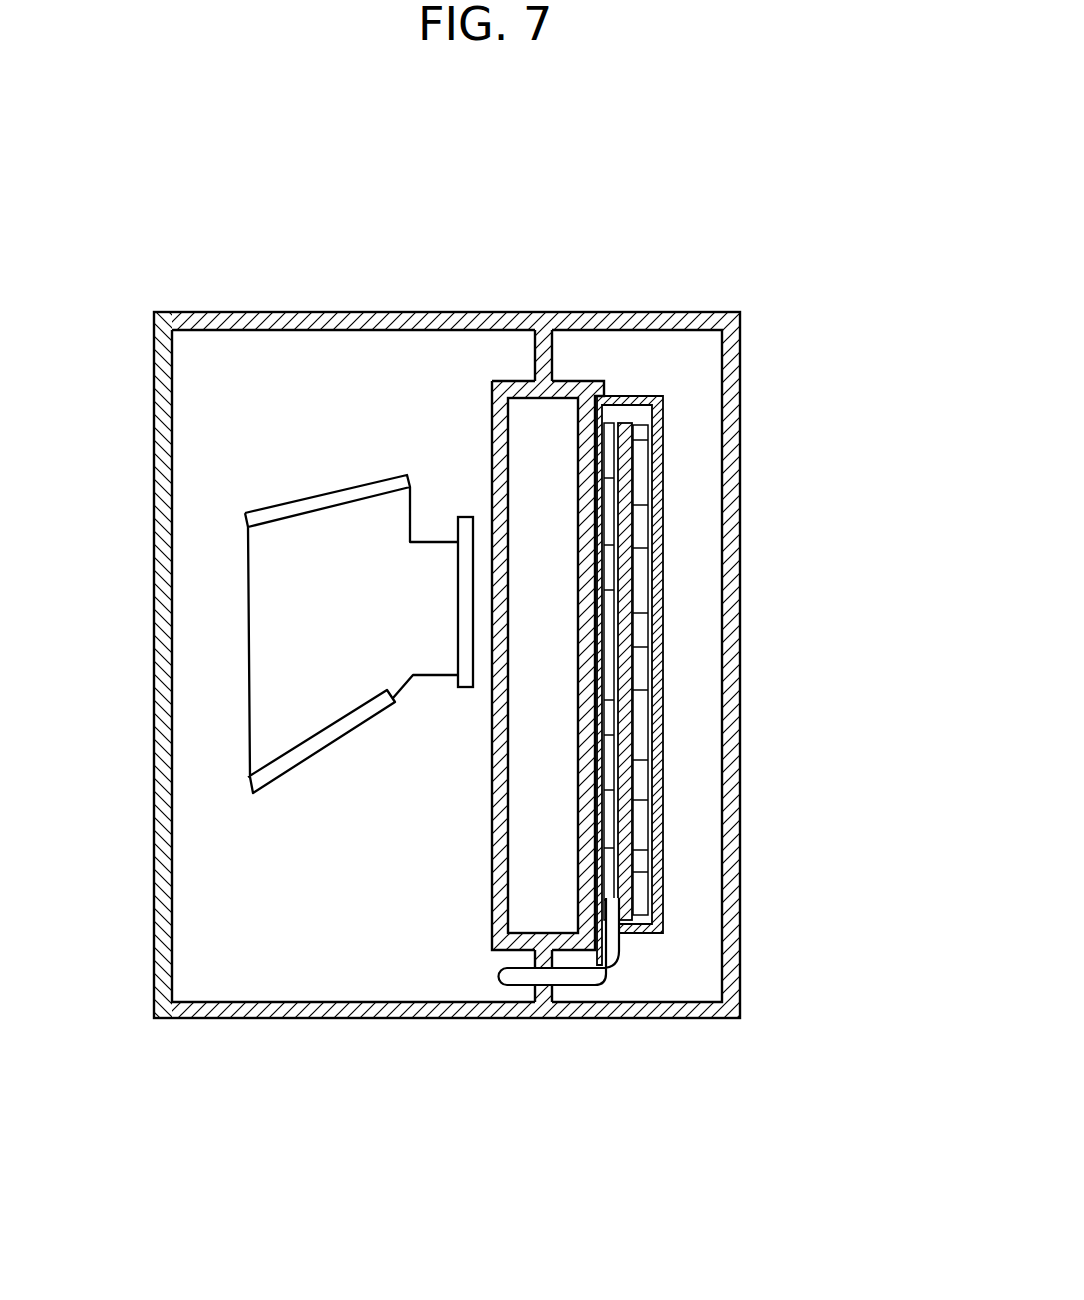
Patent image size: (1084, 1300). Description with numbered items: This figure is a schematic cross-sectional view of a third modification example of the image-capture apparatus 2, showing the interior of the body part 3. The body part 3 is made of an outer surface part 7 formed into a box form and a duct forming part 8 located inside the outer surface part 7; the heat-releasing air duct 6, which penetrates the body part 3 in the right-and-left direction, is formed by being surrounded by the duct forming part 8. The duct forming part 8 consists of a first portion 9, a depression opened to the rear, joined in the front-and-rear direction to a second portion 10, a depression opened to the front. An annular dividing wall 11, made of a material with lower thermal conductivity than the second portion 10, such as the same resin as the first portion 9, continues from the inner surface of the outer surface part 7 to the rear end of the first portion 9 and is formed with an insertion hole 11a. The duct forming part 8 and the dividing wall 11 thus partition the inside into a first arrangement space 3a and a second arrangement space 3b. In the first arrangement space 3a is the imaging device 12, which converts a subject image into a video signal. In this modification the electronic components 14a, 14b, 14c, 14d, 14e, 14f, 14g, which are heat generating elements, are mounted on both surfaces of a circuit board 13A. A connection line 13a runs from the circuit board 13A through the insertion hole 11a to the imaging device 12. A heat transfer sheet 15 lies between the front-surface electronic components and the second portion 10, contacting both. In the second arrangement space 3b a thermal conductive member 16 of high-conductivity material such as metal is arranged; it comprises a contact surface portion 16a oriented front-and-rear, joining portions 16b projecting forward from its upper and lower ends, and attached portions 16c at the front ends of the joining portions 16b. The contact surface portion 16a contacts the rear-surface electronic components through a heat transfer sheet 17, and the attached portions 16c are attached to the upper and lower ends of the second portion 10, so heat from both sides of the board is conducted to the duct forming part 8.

The speaker device 2 is at (703, 187).
The body part 3 is at (738, 520).
The first arrangement space 3a is at (420, 830).
The second arrangement space 3b is at (708, 716).
The heat-releasing air duct 6 is at (556, 668).
The outer surface part 7 is at (735, 852).
The duct forming part 8 is at (510, 381).
The first portion 9 is at (488, 408).
The second portion 10 is at (584, 400).
The dividing wall 11 is at (555, 352).
The insertion hole 11a is at (535, 985).
The imaging device 12 is at (300, 763).
The circuit board 13A is at (626, 440).
The connection line 13a is at (570, 978).
The electronic component 14a is at (642, 525).
The electronic component 14b is at (642, 668).
The electronic component 14c is at (642, 812).
The electronic component 14d is at (612, 455).
The electronic component 14e is at (613, 568).
The electronic component 14f is at (613, 762).
The electronic component 14g is at (614, 876).
The heat transfer sheet 15 is at (625, 423).
The thermal conductive member 16 is at (660, 462).
The contact surface portion 16a is at (663, 494).
The joining portion 16b is at (663, 397).
The attached portion 16c is at (606, 395).
The heat transfer sheet 17 is at (652, 862).